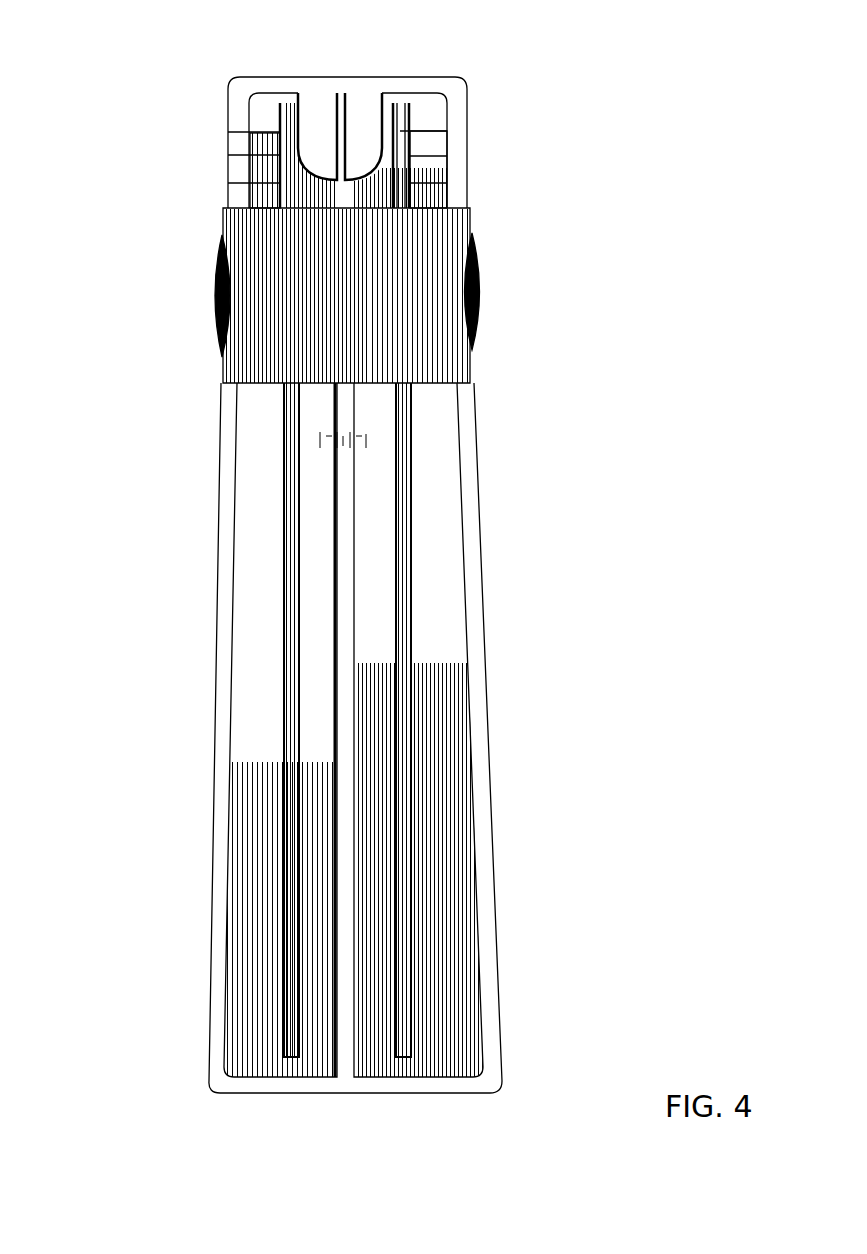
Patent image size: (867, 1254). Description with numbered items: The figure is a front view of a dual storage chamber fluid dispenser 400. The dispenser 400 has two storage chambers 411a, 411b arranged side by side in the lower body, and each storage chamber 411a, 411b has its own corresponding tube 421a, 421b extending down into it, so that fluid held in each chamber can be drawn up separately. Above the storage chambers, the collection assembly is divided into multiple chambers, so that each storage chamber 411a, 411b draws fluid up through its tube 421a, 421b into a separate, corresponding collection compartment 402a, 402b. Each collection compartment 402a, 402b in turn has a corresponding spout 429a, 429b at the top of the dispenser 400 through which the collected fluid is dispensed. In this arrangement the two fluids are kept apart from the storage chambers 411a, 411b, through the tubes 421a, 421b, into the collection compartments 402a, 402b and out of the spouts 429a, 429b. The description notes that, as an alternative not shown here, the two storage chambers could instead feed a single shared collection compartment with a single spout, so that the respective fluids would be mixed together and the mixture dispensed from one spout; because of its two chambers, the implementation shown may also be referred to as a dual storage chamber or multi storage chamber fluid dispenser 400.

The dual storage chamber fluid dispenser 400 is at (128, 207).
The collection compartment 402a is at (263, 160).
The collection compartment 402b is at (415, 131).
The spout 429a is at (322, 120).
The spout 429b is at (363, 118).
The storage chamber 411a is at (208, 897).
The storage chamber 411b is at (497, 891).
The tube 421a is at (283, 460).
The tube 421b is at (412, 508).